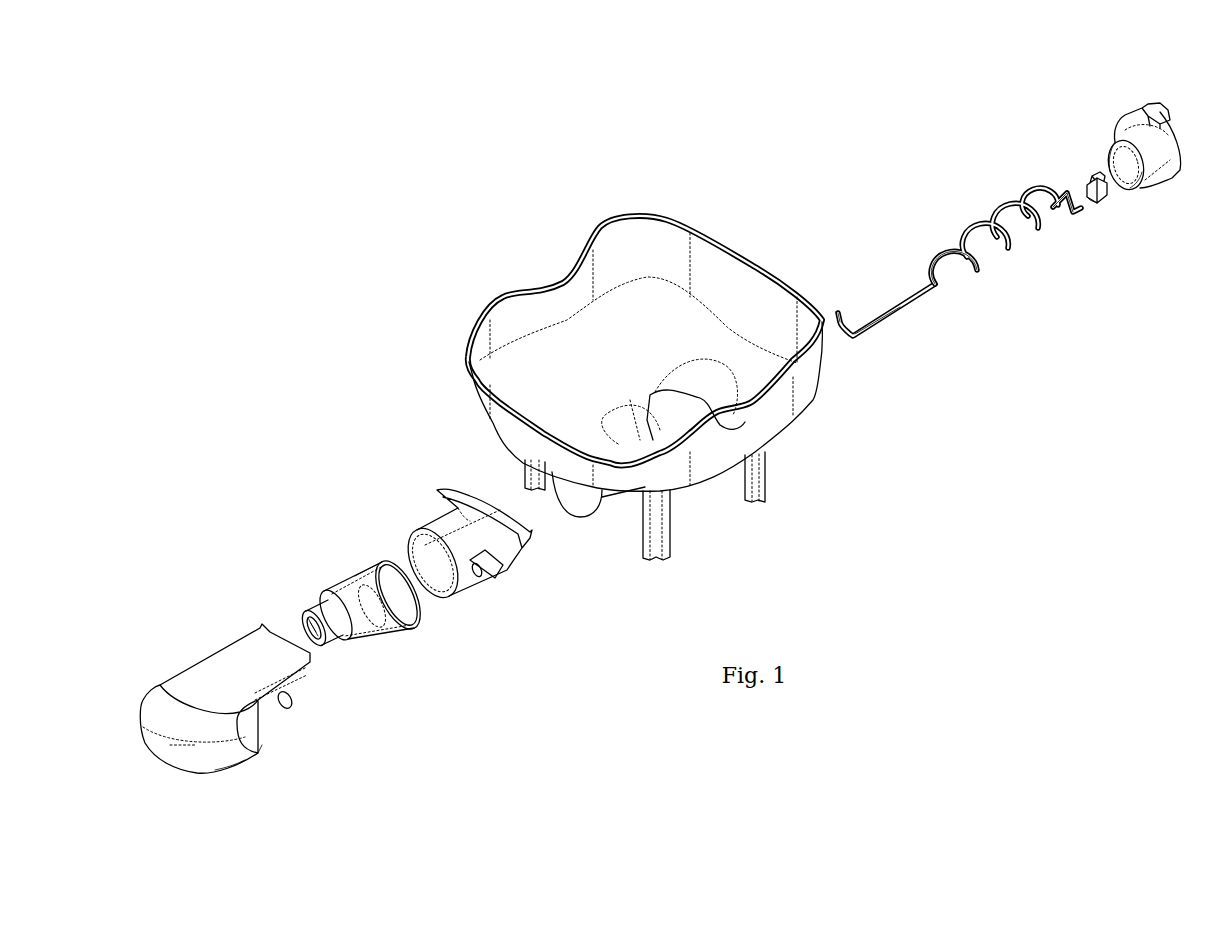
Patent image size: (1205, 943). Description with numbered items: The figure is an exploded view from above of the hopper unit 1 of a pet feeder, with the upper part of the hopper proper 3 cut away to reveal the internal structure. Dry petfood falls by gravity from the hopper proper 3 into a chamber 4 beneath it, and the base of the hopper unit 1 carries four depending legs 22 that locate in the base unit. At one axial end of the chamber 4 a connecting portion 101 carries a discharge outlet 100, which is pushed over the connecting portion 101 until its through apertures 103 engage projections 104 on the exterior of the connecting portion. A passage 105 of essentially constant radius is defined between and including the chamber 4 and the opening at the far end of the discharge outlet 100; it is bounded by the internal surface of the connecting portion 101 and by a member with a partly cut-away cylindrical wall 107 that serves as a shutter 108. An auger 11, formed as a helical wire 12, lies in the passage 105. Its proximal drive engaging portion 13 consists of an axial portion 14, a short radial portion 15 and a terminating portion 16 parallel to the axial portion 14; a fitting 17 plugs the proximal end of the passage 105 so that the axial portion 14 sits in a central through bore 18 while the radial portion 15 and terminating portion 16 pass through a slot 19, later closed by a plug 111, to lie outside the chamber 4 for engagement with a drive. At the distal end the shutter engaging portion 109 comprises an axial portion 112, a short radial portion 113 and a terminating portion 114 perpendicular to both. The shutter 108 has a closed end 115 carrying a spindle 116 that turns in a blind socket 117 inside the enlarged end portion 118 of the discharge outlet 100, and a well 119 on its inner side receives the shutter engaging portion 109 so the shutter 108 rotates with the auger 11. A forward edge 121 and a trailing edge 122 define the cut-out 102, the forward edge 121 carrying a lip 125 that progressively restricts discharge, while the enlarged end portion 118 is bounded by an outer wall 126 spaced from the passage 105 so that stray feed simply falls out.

The hopper unit 1 is at (267, 118).
The hopper proper 3 is at (635, 215).
The chamber 4 is at (580, 503).
The depending legs 22 is at (767, 478).
The auger 11 is at (977, 272).
The helical wire 12 is at (945, 246).
The drive engaging portion 13 is at (1072, 287).
The axial portion 14 is at (1055, 205).
The radial portion 15 is at (1075, 193).
The terminating portion 16 is at (1075, 215).
The fitting 17 is at (1122, 125).
The central through bore 18 is at (1113, 140).
The slot 19 is at (1142, 172).
The shutter engaging portion 109 is at (881, 235).
The plug 111 is at (1100, 203).
The axial portion 112 is at (862, 338).
The short portion 113 is at (850, 327).
The terminating portion 114 is at (843, 313).
The discharge outlet 100 is at (207, 668).
The connecting portion 101 is at (427, 527).
The cut-out 102 is at (380, 606).
The through apertures 103 is at (290, 703).
The projections 104 is at (487, 577).
The passage 105 is at (442, 592).
The cylindrical wall 107 is at (277, 475).
The shutter 108 is at (333, 475).
The closed end 115 is at (312, 607).
The spindle 116 is at (322, 637).
The blind socket 117 is at (183, 743).
The enlarged end portion 118 is at (230, 760).
The well 119 is at (307, 610).
The forward edge 121 is at (362, 567).
The trailing edge 122 is at (385, 633).
The lip 125 is at (343, 587).
The outer wall 126 is at (255, 753).